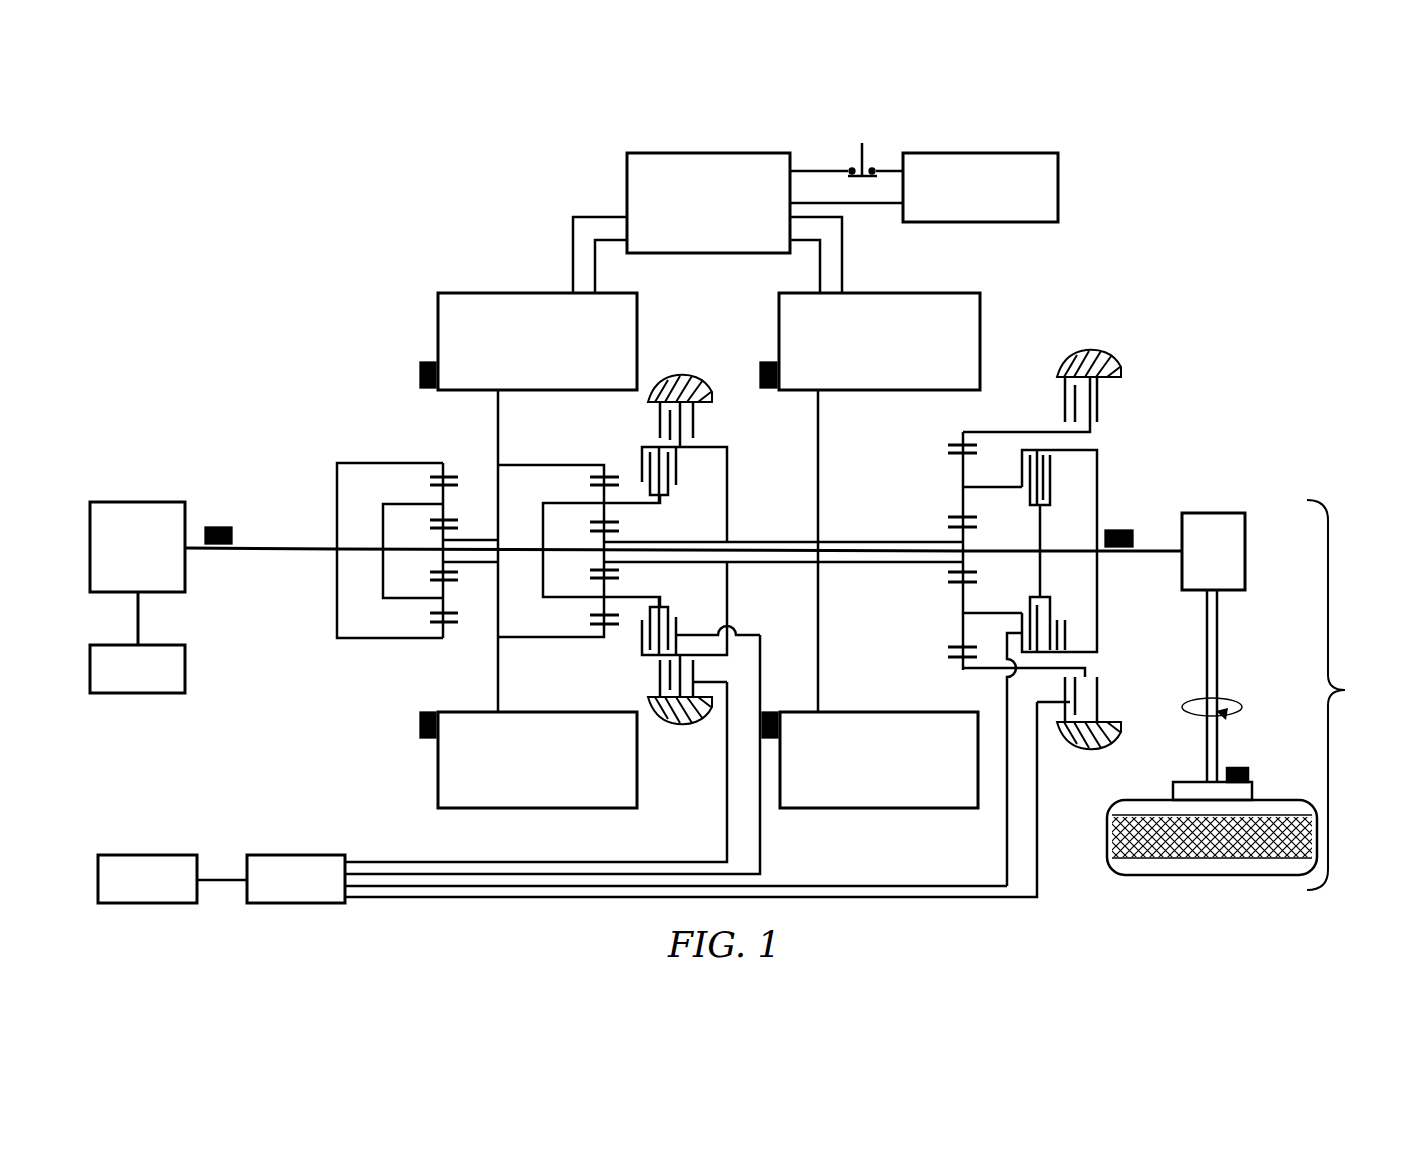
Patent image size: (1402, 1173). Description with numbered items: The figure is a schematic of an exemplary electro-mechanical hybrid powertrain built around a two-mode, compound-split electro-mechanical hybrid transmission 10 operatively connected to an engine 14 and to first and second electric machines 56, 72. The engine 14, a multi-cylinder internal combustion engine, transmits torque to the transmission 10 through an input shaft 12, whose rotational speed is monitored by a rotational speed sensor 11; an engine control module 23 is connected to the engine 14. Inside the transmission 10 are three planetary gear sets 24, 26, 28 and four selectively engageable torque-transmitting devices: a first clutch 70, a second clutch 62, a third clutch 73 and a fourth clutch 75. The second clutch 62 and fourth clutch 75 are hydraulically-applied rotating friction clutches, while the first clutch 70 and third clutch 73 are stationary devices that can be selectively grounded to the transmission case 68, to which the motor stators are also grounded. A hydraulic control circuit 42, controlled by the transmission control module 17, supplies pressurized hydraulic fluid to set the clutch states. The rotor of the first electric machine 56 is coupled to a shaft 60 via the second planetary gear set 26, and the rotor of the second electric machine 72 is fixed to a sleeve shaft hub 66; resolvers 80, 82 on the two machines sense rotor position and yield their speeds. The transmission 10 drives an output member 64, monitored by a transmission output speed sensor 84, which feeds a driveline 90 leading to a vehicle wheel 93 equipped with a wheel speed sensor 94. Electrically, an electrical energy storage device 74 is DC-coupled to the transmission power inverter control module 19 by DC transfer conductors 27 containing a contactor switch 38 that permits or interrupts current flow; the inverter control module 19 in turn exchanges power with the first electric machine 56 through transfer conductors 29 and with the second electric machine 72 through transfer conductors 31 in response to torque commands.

The two-mode compound-split electro-mechanical hybrid transmission 10 is at (388, 240).
The rotational speed sensor 11 is at (217, 527).
The input shaft 12 is at (298, 548).
The engine 14 is at (140, 500).
The transmission control module 17 is at (140, 855).
The transmission power inverter control module 19 is at (627, 170).
The engine control module 23 is at (183, 695).
The first planetary gear set 24 is at (434, 452).
The second planetary gear set 26 is at (599, 452).
The DC transfer conductors 27 is at (808, 170).
The third planetary gear set 28 is at (953, 434).
The transfer conductors 29 is at (573, 255).
The transfer conductors 31 is at (842, 245).
The contactor switch 38 is at (862, 150).
The hydraulic control circuit 42 is at (265, 855).
The first electric machine 56 is at (438, 330).
The shaft 60 is at (1010, 548).
The clutch C2 62 is at (1064, 488).
The output member 64 is at (1150, 548).
The sleeve shaft hub 66 is at (858, 540).
The transmission case 68 is at (680, 380).
The clutch C1 70 is at (1050, 390).
The second electric machine 72 is at (980, 318).
The clutch C3 73 is at (703, 423).
The electrical energy storage device 74 is at (1058, 175).
The clutch C4 75 is at (684, 481).
The resolver 80 is at (420, 375).
The resolver 82 is at (768, 362).
The transmission output speed sensor 84 is at (1120, 530).
The driveline 90 is at (1240, 695).
The vehicle wheel 93 is at (1173, 793).
The wheel speed sensor 94 is at (1240, 768).